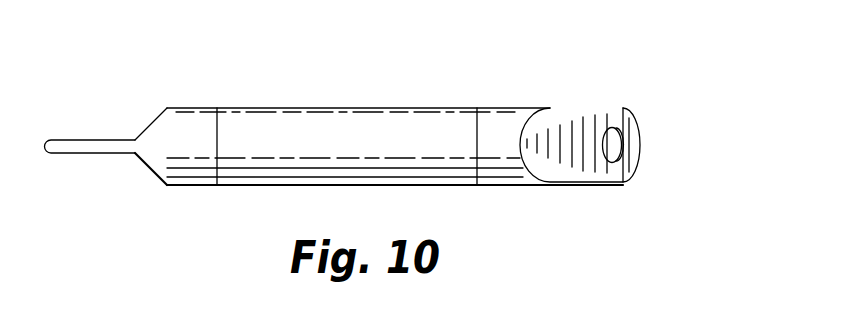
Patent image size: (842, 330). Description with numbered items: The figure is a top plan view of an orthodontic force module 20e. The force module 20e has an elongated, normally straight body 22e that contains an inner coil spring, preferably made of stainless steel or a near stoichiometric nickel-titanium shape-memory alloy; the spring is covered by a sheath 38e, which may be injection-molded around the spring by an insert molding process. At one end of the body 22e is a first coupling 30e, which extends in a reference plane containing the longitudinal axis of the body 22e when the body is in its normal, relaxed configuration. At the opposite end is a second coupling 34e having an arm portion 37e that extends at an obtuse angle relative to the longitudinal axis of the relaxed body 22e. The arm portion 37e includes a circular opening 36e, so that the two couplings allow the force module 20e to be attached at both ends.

The orthodontic force module 20e is at (557, 53).
The body 22e is at (403, 108).
The first coupling 30e is at (80, 145).
The second coupling 34e is at (612, 115).
The circular opening 36e is at (626, 156).
The arm portion 37e is at (607, 173).
The sheath 38e is at (313, 118).